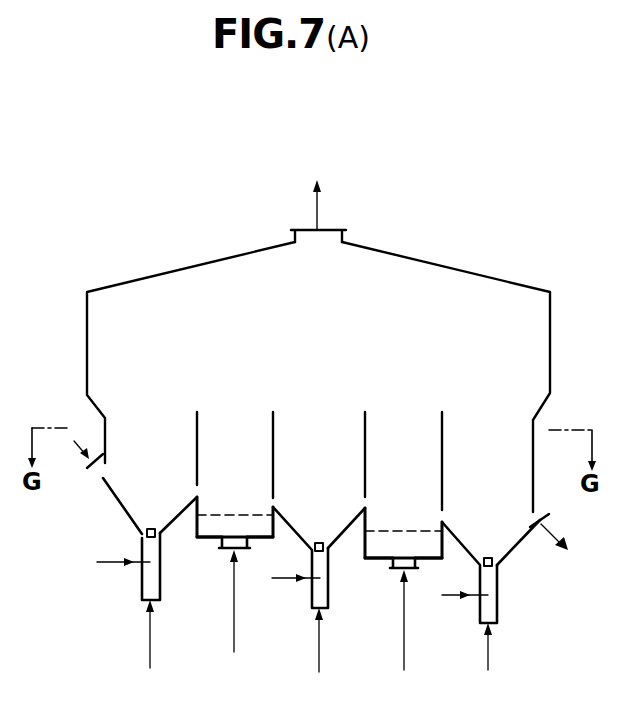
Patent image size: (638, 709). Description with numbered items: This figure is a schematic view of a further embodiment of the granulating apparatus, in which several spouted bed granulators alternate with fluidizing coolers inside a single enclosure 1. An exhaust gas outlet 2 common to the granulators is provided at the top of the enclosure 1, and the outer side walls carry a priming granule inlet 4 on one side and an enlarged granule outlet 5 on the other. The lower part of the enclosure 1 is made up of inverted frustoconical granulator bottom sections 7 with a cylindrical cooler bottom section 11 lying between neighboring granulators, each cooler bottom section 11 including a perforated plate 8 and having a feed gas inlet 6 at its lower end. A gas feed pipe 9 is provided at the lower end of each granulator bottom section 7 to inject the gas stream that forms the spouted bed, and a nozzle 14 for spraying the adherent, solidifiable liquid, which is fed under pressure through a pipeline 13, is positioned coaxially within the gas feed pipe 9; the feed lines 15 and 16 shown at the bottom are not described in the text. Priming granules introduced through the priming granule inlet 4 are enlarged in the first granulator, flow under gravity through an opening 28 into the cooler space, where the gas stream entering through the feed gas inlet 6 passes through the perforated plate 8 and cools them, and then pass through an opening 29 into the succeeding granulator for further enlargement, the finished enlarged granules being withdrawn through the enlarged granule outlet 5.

The enclosure 1 is at (229, 258).
The exhaust gas outlet 2 is at (312, 228).
The priming granule inlet 4 is at (100, 481).
The enlarged granule outlet 5 is at (540, 513).
The feed gas inlet 6 is at (250, 546).
The granulator bottom section 7 is at (126, 521).
The perforated plate 8 is at (216, 515).
The gas feed pipe 9 is at (141, 598).
The cooler bottom section 11 is at (210, 548).
The pipeline 13 is at (107, 566).
The nozzle 14 is at (151, 528).
The gas supply to chamber 15 is at (234, 644).
The gas supply to pipe 16 is at (150, 644).
The opening 28 is at (199, 486).
The opening 29 is at (276, 498).